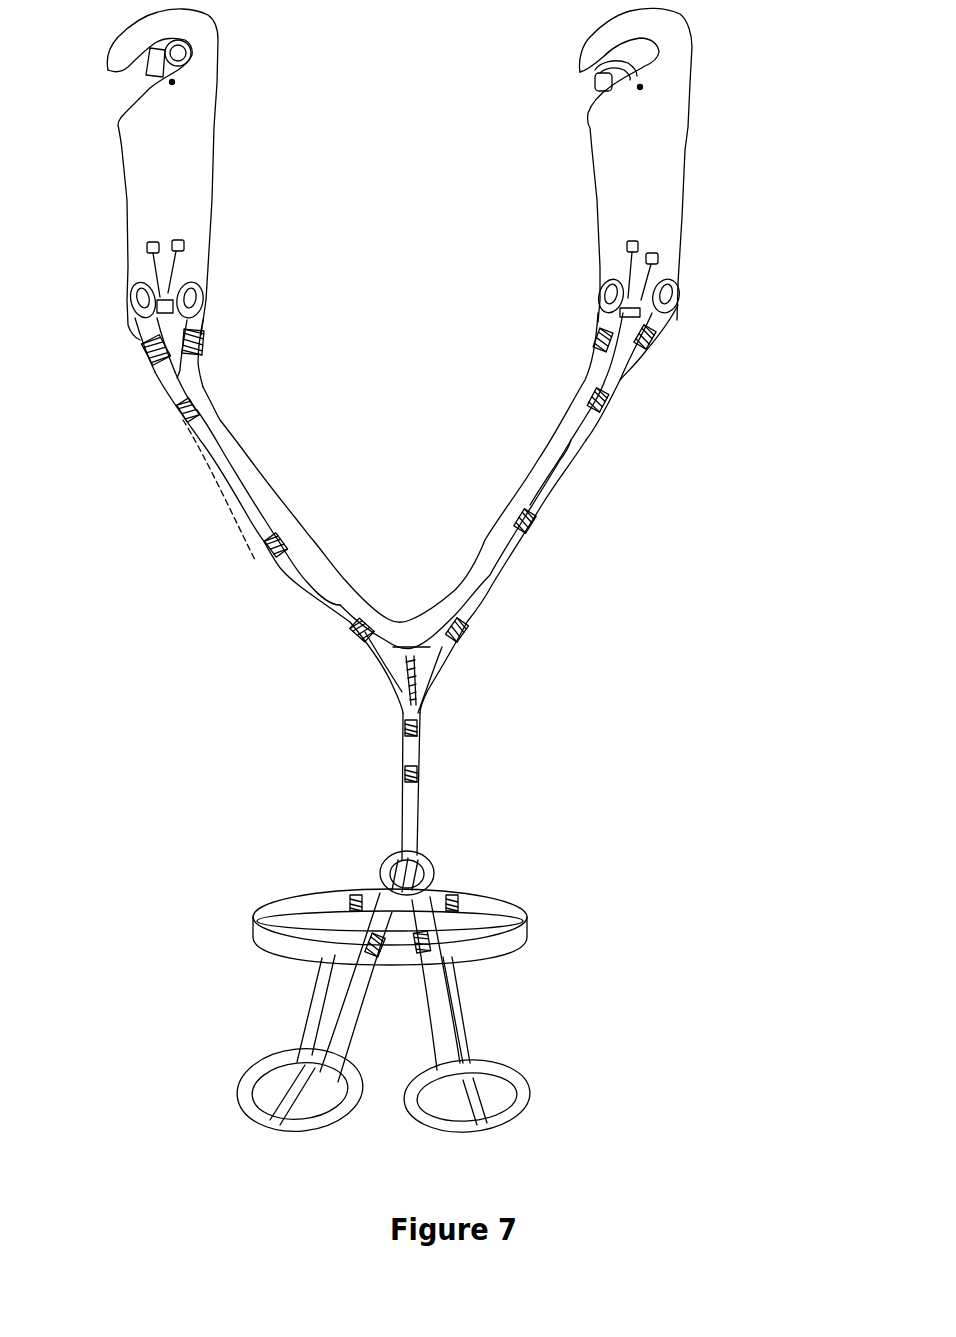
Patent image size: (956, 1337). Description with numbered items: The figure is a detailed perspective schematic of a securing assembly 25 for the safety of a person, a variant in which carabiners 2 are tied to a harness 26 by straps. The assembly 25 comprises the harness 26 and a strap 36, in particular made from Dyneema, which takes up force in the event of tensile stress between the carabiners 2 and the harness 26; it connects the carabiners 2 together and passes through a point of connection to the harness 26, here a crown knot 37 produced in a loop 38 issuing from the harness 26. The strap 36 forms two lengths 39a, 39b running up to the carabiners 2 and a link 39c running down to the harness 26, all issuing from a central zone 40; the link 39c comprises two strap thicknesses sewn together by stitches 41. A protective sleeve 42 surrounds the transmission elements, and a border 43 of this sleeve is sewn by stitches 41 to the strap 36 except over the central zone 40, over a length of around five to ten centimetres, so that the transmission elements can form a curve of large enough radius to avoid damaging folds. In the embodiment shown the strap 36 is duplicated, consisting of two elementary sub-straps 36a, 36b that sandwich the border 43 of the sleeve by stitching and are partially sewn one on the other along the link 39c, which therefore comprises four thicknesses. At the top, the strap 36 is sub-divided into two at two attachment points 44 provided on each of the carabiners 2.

The carabiners 2 is at (613, 183).
The securing assembly 25 is at (788, 118).
The harness 26 is at (499, 911).
The strap 36 is at (215, 457).
The elementary sub-strap 36a is at (627, 362).
The elementary sub-strap 36b is at (590, 348).
The crown knot 37 is at (447, 860).
The loop 38 is at (370, 893).
The length 39a is at (280, 458).
The length 39b is at (577, 519).
The link 39c is at (444, 790).
The central zone 40 is at (460, 676).
The stitches 41 is at (280, 553).
The protective sleeve 42 is at (318, 562).
The border 43 is at (548, 472).
The attachment points 44 is at (675, 287).